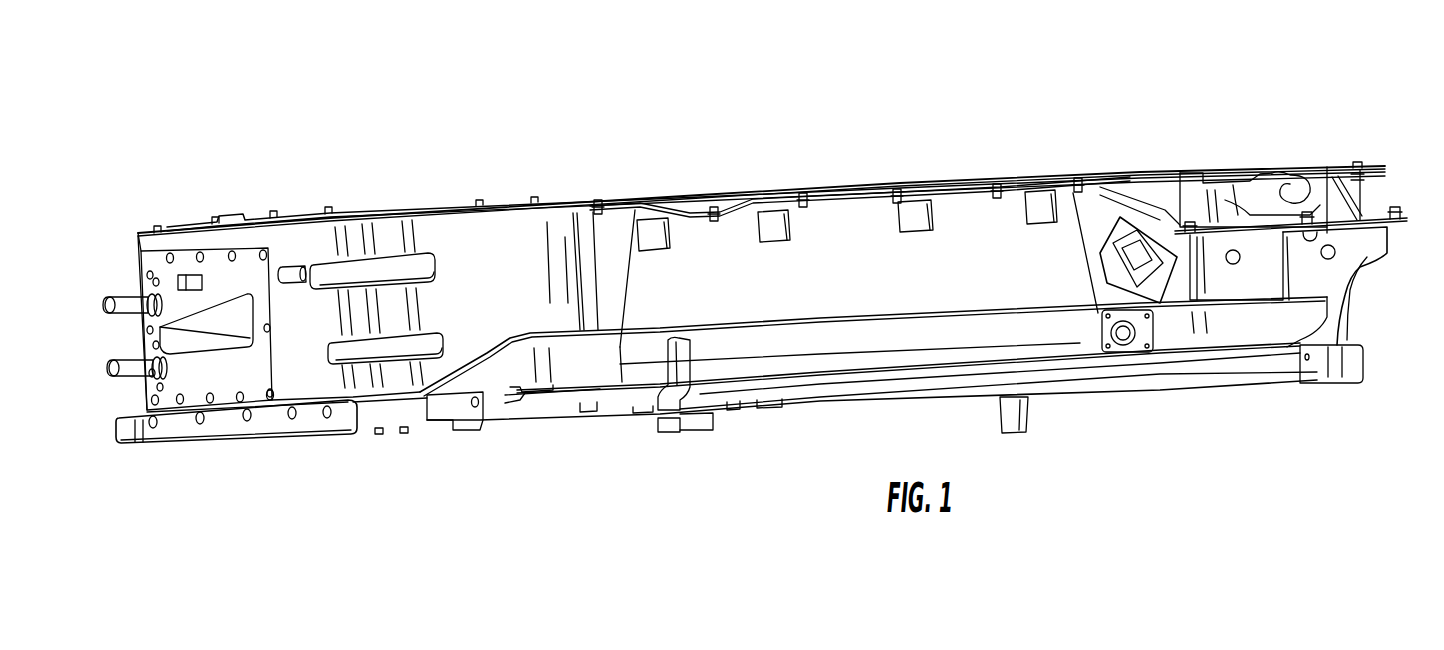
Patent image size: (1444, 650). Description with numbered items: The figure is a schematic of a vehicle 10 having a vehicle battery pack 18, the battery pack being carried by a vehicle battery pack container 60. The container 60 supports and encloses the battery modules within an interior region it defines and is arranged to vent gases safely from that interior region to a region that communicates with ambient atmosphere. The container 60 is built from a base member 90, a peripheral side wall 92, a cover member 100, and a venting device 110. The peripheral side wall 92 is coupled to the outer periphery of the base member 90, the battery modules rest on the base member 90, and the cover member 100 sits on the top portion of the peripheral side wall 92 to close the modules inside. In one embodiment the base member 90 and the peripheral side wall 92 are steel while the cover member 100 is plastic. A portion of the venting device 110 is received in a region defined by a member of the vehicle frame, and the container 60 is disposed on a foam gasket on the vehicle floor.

The vehicle 10 is at (755, 302).
The vehicle battery pack 18 is at (1181, 156).
The vehicle battery pack container 60 is at (365, 208).
The base member 90 is at (580, 435).
The peripheral side wall 92 is at (1362, 250).
The cover member 100 is at (853, 191).
The venting device 110 is at (1028, 421).